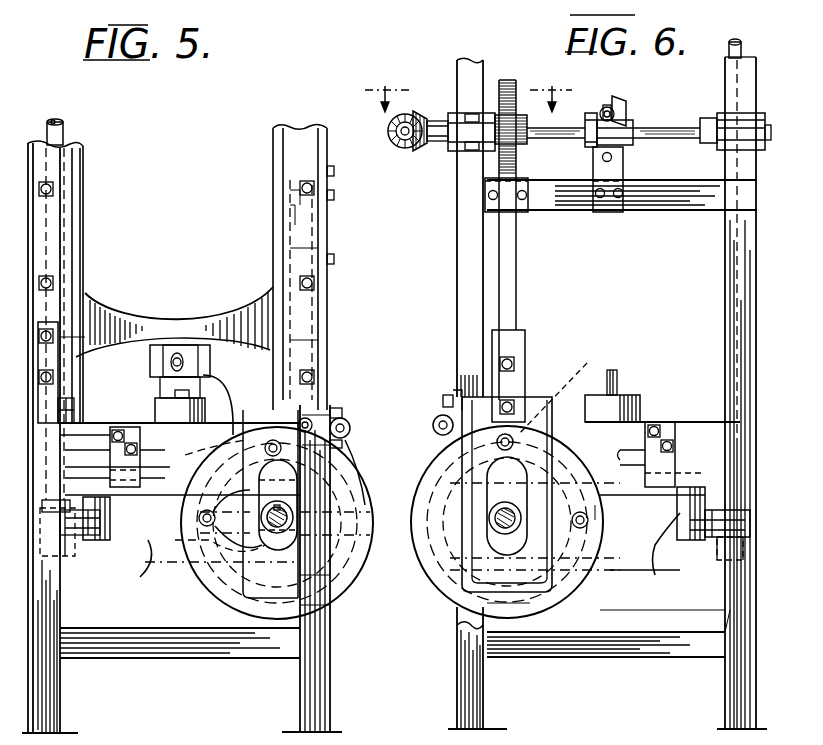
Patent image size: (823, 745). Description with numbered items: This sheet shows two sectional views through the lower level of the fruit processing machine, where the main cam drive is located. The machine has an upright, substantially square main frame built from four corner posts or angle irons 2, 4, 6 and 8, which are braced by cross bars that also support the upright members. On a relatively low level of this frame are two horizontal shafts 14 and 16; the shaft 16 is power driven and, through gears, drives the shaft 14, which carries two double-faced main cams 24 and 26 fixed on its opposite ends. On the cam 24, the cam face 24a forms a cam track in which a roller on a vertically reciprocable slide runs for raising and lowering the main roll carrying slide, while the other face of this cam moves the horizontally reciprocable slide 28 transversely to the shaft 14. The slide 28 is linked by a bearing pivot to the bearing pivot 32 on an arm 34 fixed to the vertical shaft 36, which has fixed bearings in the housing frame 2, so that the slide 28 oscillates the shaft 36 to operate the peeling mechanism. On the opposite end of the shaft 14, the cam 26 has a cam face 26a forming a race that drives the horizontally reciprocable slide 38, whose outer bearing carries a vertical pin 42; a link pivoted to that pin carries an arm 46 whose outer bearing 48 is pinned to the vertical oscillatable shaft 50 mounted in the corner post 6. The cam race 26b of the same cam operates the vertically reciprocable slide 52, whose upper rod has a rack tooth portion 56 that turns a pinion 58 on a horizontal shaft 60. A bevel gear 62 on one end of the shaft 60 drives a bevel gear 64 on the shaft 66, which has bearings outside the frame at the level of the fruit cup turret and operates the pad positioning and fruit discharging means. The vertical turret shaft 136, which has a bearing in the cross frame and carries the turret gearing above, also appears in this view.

In FIG. 5, the corner post 2 is at (50, 607).
In FIG. 5, the corner post 4 is at (314, 681).
In FIG. 6, the corner post 6 is at (730, 697).
In FIG. 6, the corner post 8 is at (510, 707).
In FIG. 5, the horizontal shaft 14 is at (280, 517).
In FIG. 5, the horizontal shaft 16 is at (348, 422).
In FIG. 6, the horizontal shaft 16 is at (436, 418).
In FIG. 5, the main cam 24 is at (215, 580).
In FIG. 5, the cam face 24a is at (290, 555).
In FIG. 6, the main cam 26 is at (567, 568).
In FIG. 6, the cam face 26a is at (602, 512).
In FIG. 6, the cam race 26b is at (610, 370).
In FIG. 5, the horizontally reciprocable slide 28 is at (179, 473).
In FIG. 5, the bearing pivot 32 is at (97, 540).
In FIG. 5, the arm 34 is at (70, 556).
In FIG. 5, the vertical shaft 36 is at (63, 135).
In FIG. 6, the horizontally reciprocable slide 38 is at (662, 505).
In FIG. 6, the vertical pin 42 is at (690, 500).
In FIG. 6, the arm 46 is at (713, 537).
In FIG. 6, the outer bearing 48 is at (728, 560).
In FIG. 6, the vertical oscillatable shaft 50 is at (728, 50).
In FIG. 6, the vertically reciprocable slide 52 is at (533, 408).
In FIG. 6, the rack tooth portion 56 is at (507, 227).
In FIG. 6, the pinion 58 is at (524, 140).
In FIG. 6, the horizontal shaft 60 is at (672, 138).
In FIG. 6, the bevel gear 62 is at (426, 148).
In FIG. 6, the bevel gear 64 is at (403, 147).
In FIG. 6, the shaft 66 is at (390, 129).
In FIG. 6, the vertical shaft 136 is at (618, 385).